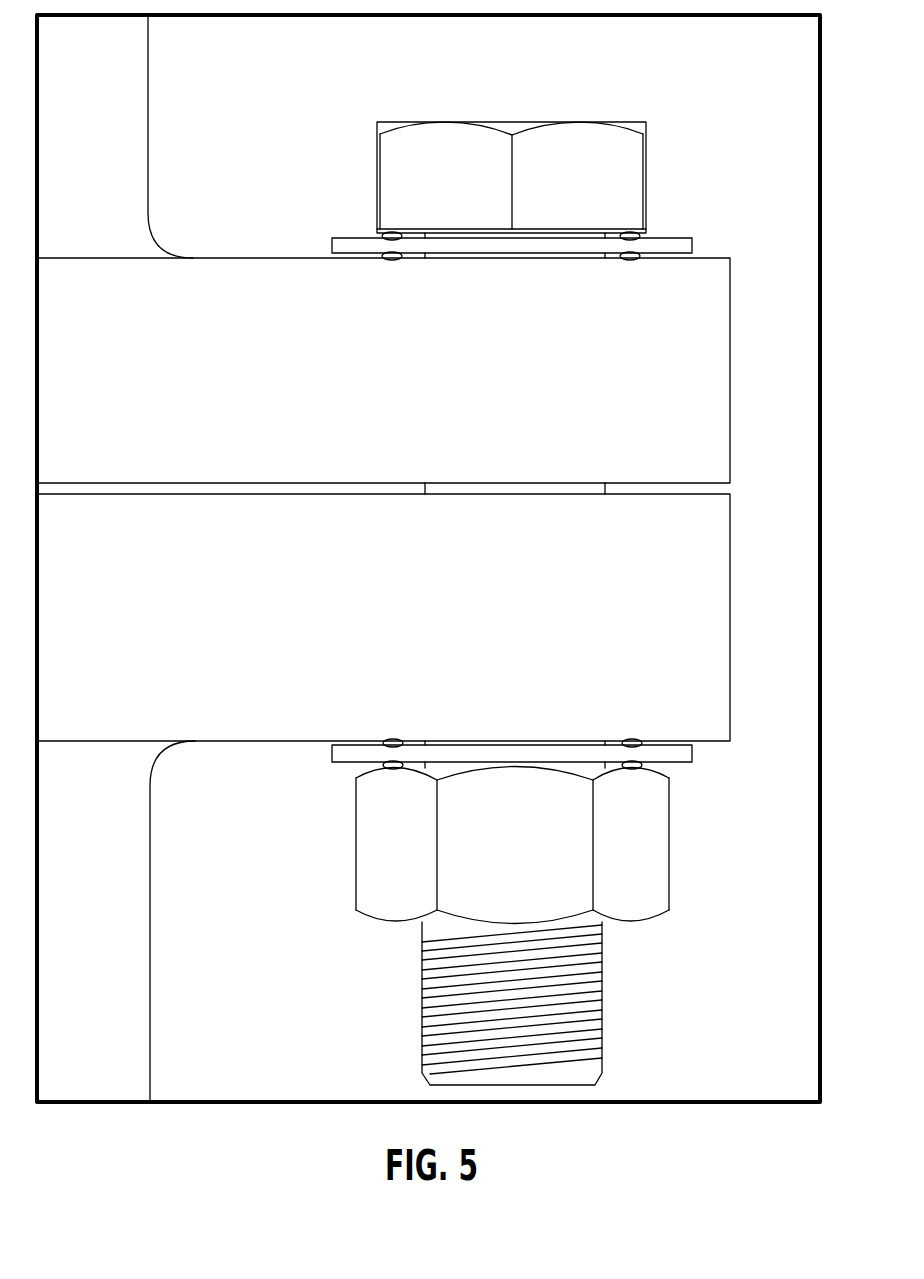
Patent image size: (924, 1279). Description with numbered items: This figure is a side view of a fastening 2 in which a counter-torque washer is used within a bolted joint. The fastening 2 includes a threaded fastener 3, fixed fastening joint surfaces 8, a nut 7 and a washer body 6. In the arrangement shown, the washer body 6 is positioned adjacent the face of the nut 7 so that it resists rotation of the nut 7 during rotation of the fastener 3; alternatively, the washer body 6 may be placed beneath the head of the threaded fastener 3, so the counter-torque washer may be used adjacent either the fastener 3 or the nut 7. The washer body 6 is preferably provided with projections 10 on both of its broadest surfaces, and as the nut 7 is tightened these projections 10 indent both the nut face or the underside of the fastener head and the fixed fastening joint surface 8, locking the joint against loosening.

The fastening 2 is at (348, 90).
The threaded fastener 3 is at (523, 121).
The washer body 6 is at (512, 255).
The nut 7 is at (670, 841).
The fixed fastening joint surface 8 is at (278, 258).
The projections 10 is at (631, 233).